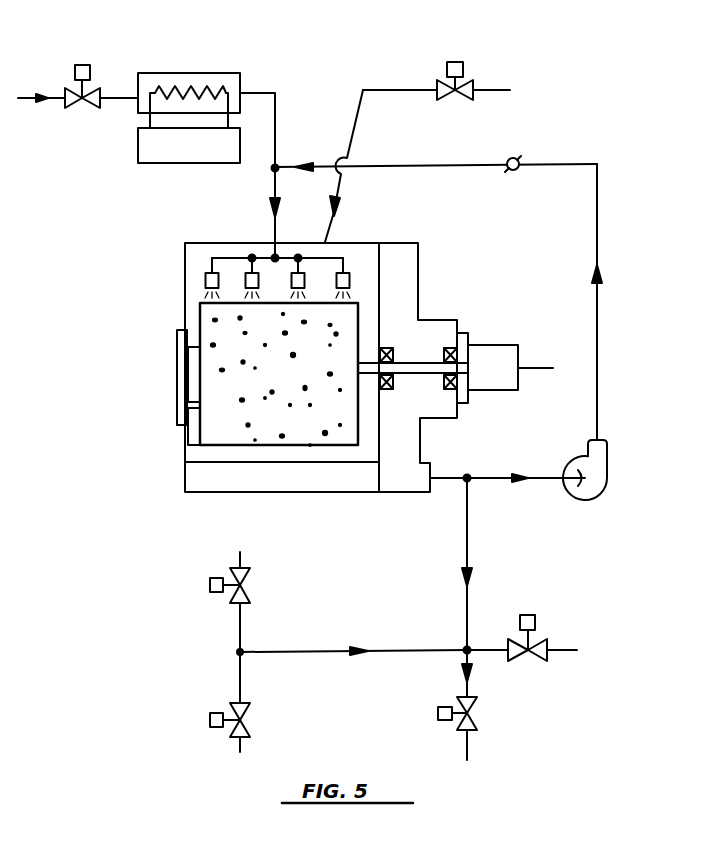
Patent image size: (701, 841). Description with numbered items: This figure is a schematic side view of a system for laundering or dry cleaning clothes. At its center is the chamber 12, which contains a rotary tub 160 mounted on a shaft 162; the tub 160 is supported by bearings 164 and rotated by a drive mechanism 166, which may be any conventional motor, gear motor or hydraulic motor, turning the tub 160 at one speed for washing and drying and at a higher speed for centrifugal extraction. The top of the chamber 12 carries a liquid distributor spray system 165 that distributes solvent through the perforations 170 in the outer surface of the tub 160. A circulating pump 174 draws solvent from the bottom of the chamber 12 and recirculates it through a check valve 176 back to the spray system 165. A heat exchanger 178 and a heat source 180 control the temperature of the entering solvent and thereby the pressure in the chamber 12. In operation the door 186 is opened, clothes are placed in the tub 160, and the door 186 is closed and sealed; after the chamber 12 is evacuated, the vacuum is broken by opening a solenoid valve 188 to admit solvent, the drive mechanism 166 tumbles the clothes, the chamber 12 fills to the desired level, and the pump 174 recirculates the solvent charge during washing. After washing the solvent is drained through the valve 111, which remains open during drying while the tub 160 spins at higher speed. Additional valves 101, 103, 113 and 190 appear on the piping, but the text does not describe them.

The chamber 12 is at (185, 243).
The valve 101 is at (252, 720).
The valve 103 is at (253, 582).
The valve 111 is at (480, 715).
The valve 113 is at (540, 630).
The rotary tub 160 is at (357, 300).
The shaft 162 is at (425, 362).
The bearings 164 is at (447, 397).
The liquid distributor spray system 165 is at (352, 272).
The drive mechanism 166 is at (508, 347).
The perforations 170 is at (275, 417).
The circulating pump 174 is at (617, 460).
The check valve 176 is at (523, 157).
The heat exchanger 178 is at (237, 73).
The heat source 180 is at (200, 160).
The door 186 is at (178, 330).
The solenoid valve 188 is at (93, 80).
The valve 190 is at (468, 75).